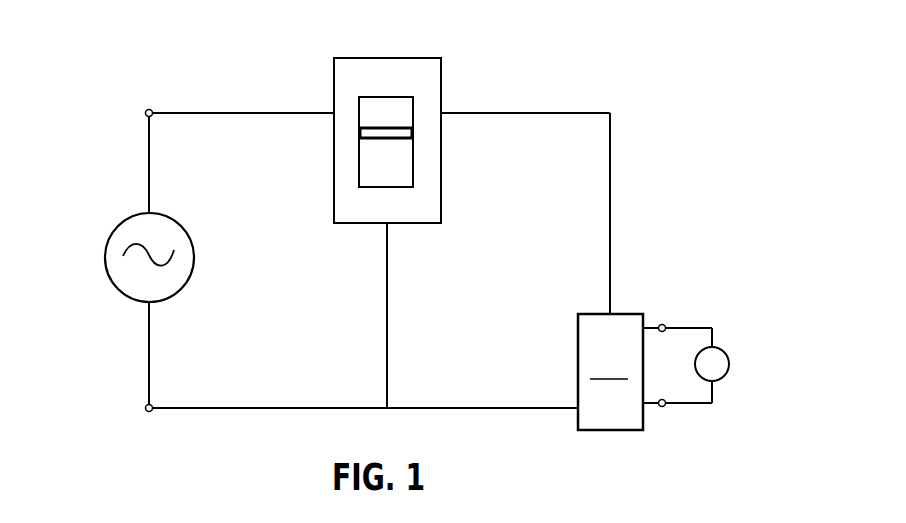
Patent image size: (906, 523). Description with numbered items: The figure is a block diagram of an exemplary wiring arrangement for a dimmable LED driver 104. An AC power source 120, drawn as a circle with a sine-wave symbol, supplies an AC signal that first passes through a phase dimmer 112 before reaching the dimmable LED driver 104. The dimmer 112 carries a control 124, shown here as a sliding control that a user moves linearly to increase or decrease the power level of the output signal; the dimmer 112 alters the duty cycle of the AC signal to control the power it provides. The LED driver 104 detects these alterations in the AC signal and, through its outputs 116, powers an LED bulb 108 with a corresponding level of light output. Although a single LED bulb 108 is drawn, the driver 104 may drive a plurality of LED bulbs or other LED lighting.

The dimmable LED driver 104 is at (610, 372).
The LED bulb 108 is at (728, 350).
The phase dimmer 112 is at (443, 72).
The outputs 116 is at (665, 323).
The AC power source 120 is at (127, 219).
The control 124 is at (382, 128).